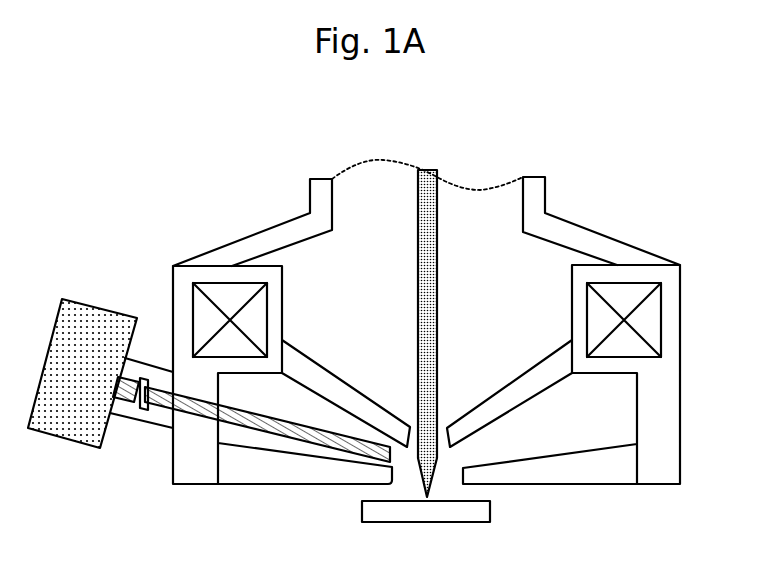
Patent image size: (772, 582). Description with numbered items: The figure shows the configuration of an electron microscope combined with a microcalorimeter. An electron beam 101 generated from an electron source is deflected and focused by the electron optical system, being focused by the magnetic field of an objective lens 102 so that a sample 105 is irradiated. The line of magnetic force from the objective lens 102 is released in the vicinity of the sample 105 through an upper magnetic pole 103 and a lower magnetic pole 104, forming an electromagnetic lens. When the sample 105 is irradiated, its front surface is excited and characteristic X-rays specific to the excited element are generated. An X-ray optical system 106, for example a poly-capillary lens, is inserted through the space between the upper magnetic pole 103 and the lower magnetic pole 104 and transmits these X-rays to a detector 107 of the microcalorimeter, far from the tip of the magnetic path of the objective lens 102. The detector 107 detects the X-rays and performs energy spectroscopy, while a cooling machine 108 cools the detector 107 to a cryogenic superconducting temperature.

The electron beam 101 is at (433, 195).
The objective lens 102 is at (627, 300).
The upper magnetic pole 103 is at (533, 380).
The lower magnetic pole 104 is at (572, 465).
The sample 105 is at (445, 512).
The X-ray optical system 106 is at (327, 437).
The detector 107 is at (122, 417).
The cooling machine 108 is at (83, 335).